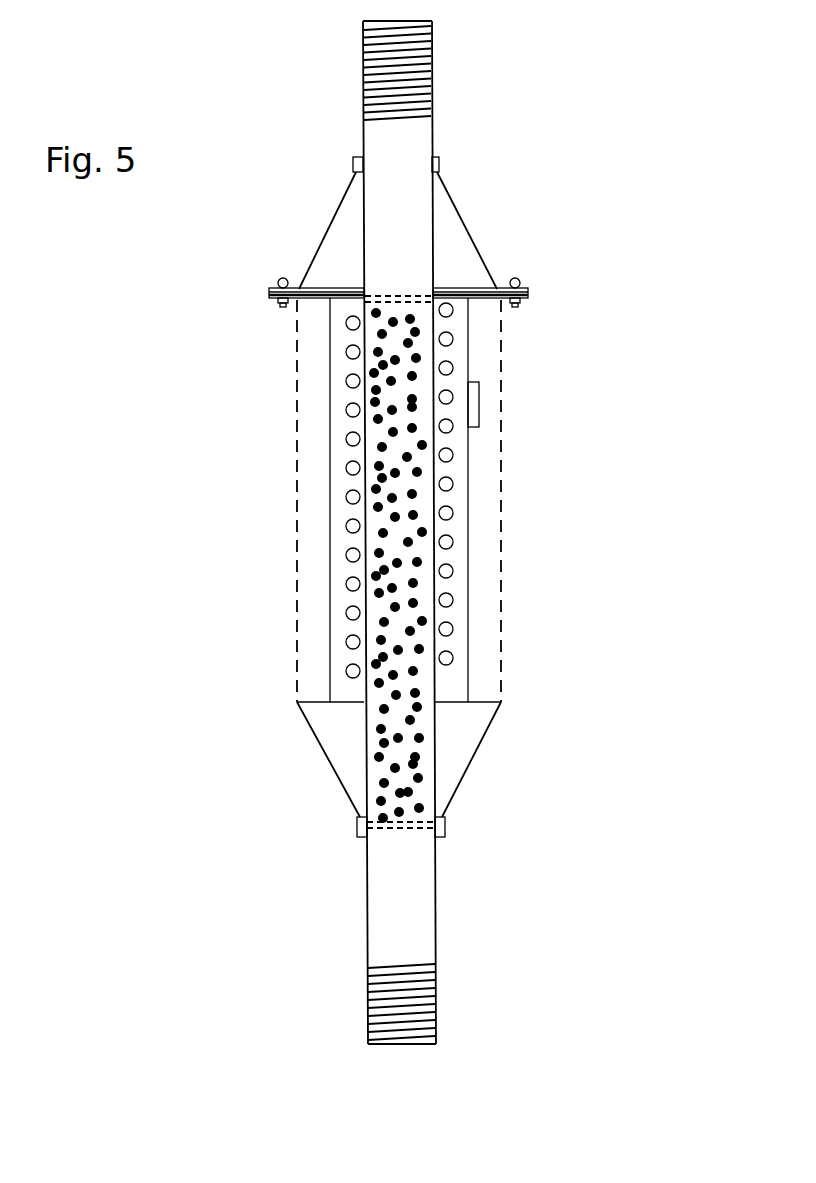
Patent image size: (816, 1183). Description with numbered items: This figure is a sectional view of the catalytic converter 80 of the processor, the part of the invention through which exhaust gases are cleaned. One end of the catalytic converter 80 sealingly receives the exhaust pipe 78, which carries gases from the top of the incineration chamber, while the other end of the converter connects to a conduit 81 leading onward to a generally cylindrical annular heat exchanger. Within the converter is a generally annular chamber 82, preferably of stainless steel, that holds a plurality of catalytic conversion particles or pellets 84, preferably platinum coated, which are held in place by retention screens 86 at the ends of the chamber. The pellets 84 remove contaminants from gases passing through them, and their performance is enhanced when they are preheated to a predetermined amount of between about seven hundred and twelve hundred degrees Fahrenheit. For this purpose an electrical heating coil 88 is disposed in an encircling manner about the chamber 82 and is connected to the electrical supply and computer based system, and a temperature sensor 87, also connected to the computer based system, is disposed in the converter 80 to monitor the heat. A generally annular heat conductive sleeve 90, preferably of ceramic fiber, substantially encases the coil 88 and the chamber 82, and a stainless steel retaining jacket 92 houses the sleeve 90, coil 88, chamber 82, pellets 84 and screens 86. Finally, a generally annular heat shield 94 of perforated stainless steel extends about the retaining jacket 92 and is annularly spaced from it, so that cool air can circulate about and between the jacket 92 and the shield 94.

The exhaust pipe 78 is at (437, 930).
The catalytic converter 80 is at (394, 532).
The conduit 81 is at (432, 94).
The annular chamber 82 is at (434, 329).
The catalytic conversion pellets 84 is at (375, 577).
The retention screens 86 is at (394, 296).
The temperature sensor 87 is at (479, 409).
The electrical heating coil 88 is at (346, 499).
The heat conductive sleeve 90 is at (457, 588).
The retaining jacket 92 is at (468, 525).
The heat shield 94 is at (503, 480).